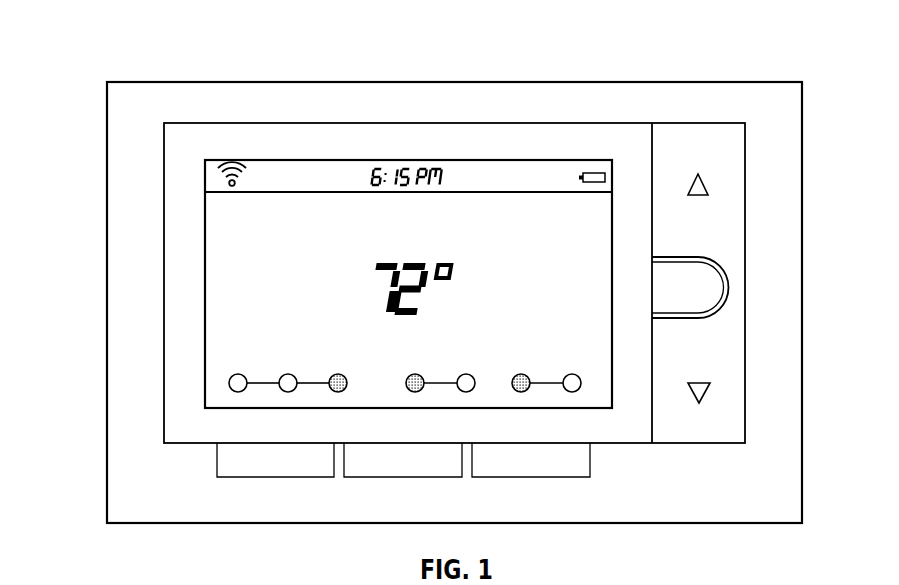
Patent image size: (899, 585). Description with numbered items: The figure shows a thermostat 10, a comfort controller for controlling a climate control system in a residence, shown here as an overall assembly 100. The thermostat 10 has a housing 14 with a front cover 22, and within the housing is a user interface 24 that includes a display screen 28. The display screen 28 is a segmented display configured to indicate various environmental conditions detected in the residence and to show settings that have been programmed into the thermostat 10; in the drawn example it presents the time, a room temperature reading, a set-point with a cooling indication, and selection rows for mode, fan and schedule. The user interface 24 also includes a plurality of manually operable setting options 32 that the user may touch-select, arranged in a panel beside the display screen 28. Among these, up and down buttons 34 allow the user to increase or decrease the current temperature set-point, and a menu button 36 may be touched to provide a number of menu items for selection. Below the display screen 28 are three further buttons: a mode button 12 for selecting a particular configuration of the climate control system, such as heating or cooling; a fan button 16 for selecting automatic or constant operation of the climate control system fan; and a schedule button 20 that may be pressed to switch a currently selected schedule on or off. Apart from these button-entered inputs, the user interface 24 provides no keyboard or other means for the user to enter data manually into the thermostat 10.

The thermostat 10 is at (100, 34).
The thermostat 100 is at (121, 574).
The mode button 12 is at (263, 478).
The housing 14 is at (757, 82).
The fan button 16 is at (391, 478).
The schedule button 20 is at (518, 478).
The front cover 22 is at (245, 84).
The user interface 24 is at (122, 276).
The display screen 28 is at (262, 270).
The manually operable setting options 32 is at (775, 152).
The up and down buttons 34 is at (706, 393).
The menu button 36 is at (735, 288).